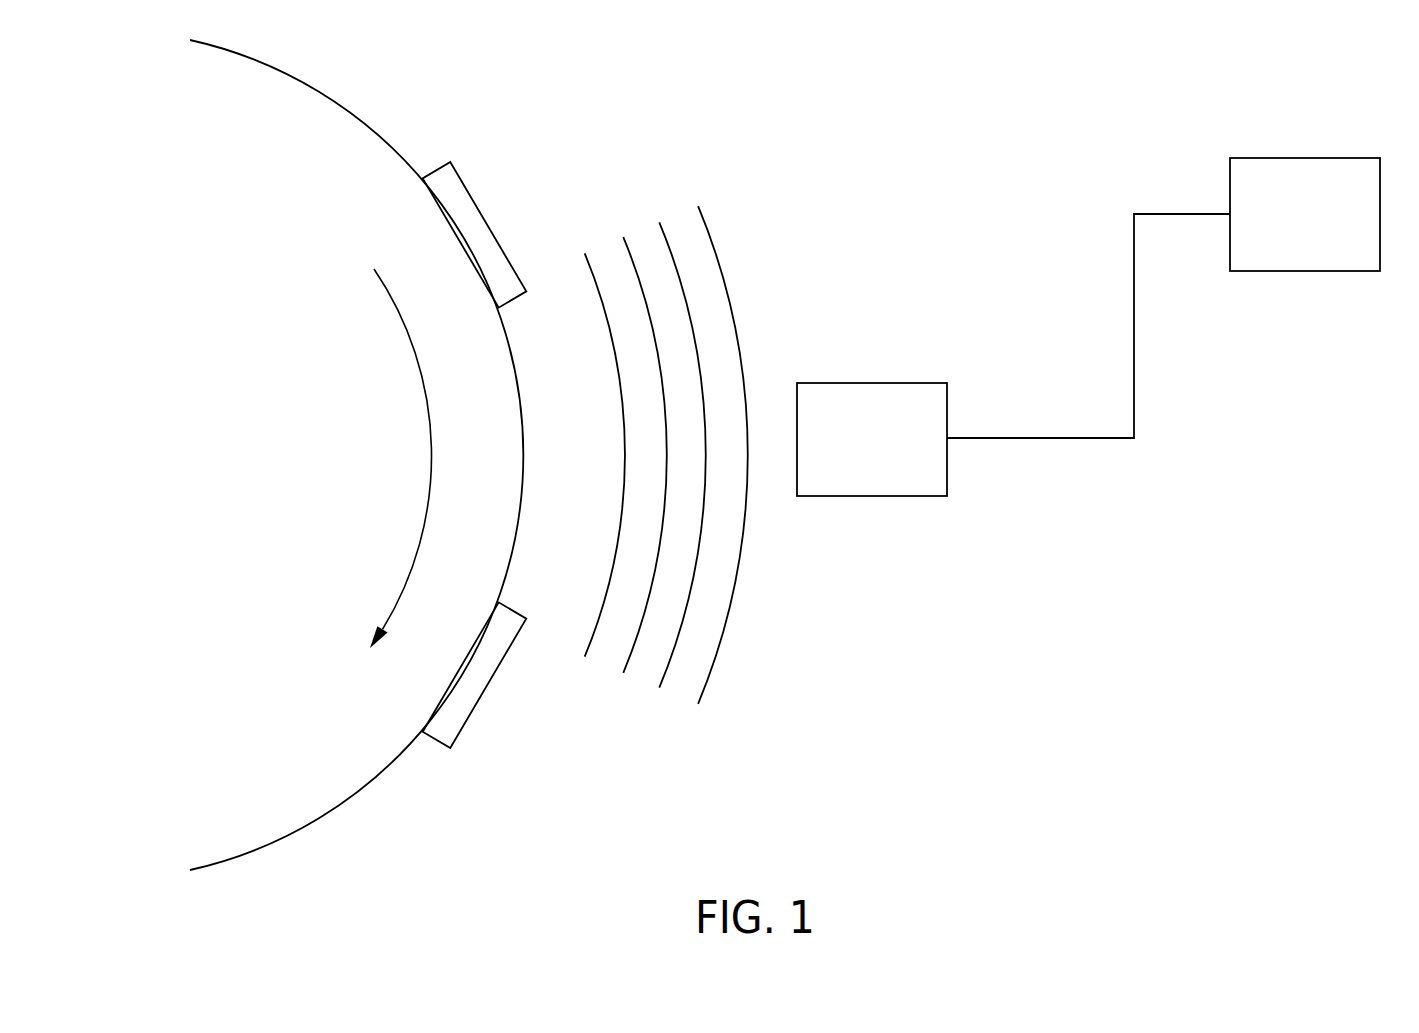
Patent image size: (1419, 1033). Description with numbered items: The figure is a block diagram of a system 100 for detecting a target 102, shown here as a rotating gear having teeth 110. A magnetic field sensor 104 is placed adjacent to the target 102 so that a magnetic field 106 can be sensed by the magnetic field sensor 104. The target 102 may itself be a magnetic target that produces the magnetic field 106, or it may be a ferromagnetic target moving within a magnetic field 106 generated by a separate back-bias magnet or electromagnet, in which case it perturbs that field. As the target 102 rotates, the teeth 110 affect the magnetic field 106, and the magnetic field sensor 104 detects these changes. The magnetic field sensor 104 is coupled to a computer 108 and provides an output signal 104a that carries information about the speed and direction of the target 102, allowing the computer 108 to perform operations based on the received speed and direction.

The system 100 is at (785, 455).
The target 102 is at (339, 452).
The magnetic field sensor 104 is at (850, 478).
The output signal 104a is at (1086, 440).
The magnetic field 106 is at (641, 724).
The computer 108 is at (1283, 240).
The teeth 110 is at (487, 690).